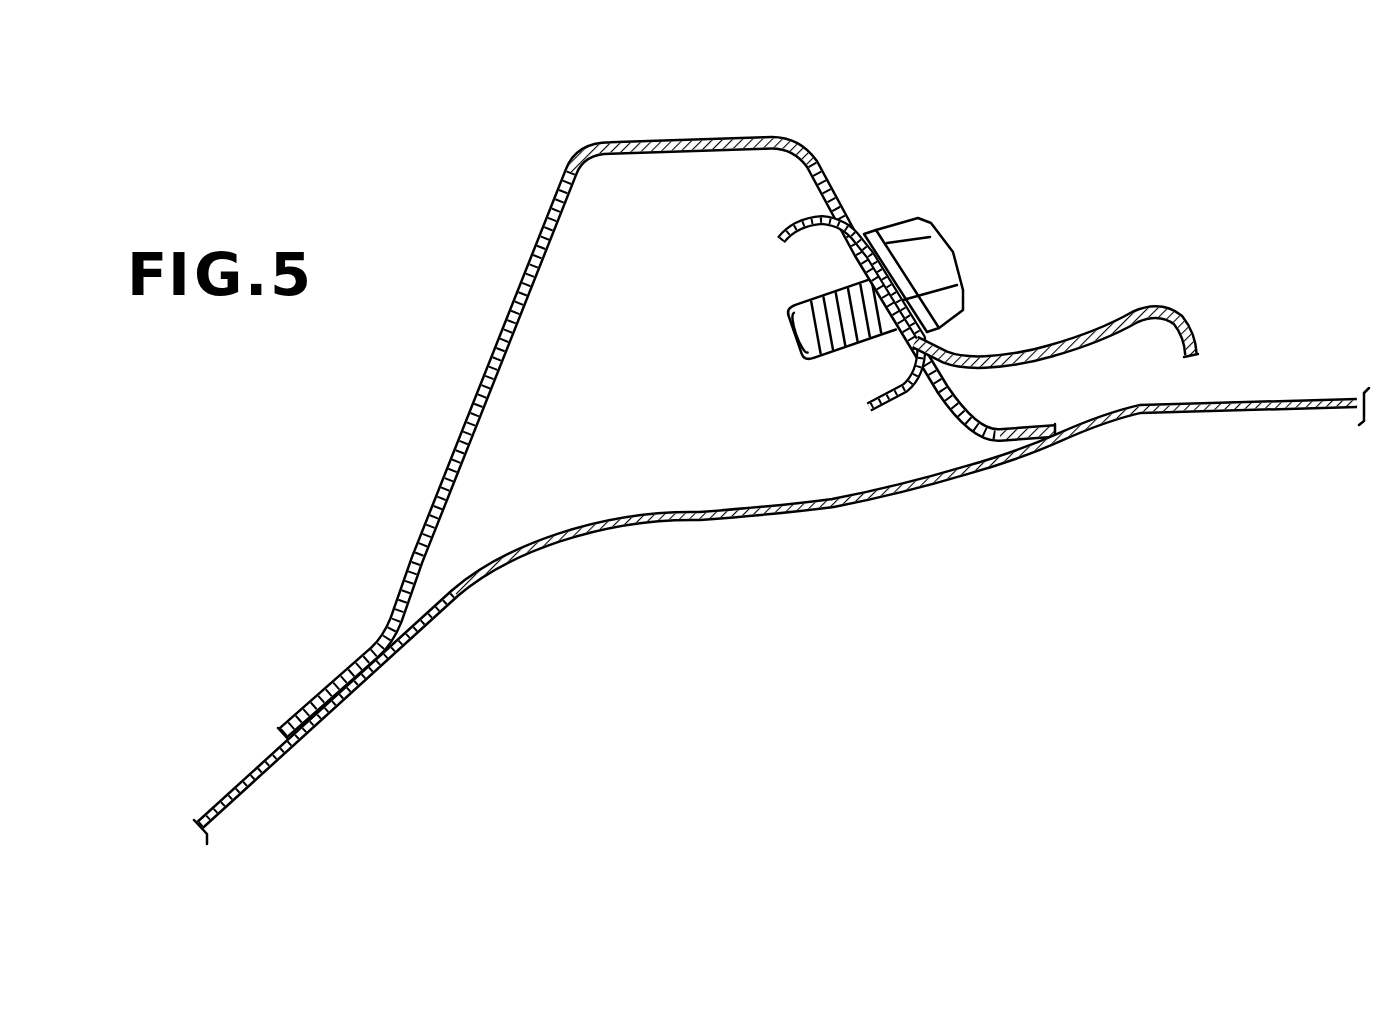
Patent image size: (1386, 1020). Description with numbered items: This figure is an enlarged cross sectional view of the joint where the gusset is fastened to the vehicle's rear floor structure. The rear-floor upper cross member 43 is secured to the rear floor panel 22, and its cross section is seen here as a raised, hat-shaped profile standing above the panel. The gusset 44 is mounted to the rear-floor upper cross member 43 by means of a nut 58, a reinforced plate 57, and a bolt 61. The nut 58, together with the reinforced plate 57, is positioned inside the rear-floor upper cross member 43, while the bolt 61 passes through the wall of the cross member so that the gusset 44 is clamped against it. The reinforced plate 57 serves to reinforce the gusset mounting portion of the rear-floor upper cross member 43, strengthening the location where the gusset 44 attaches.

The rear floor panel 22 is at (252, 773).
The rear-floor upper cross member 43 is at (540, 222).
The gusset 44 is at (1150, 308).
The reinforced plate 57 is at (788, 230).
The nut 58 is at (860, 352).
The bolt 61 is at (950, 247).